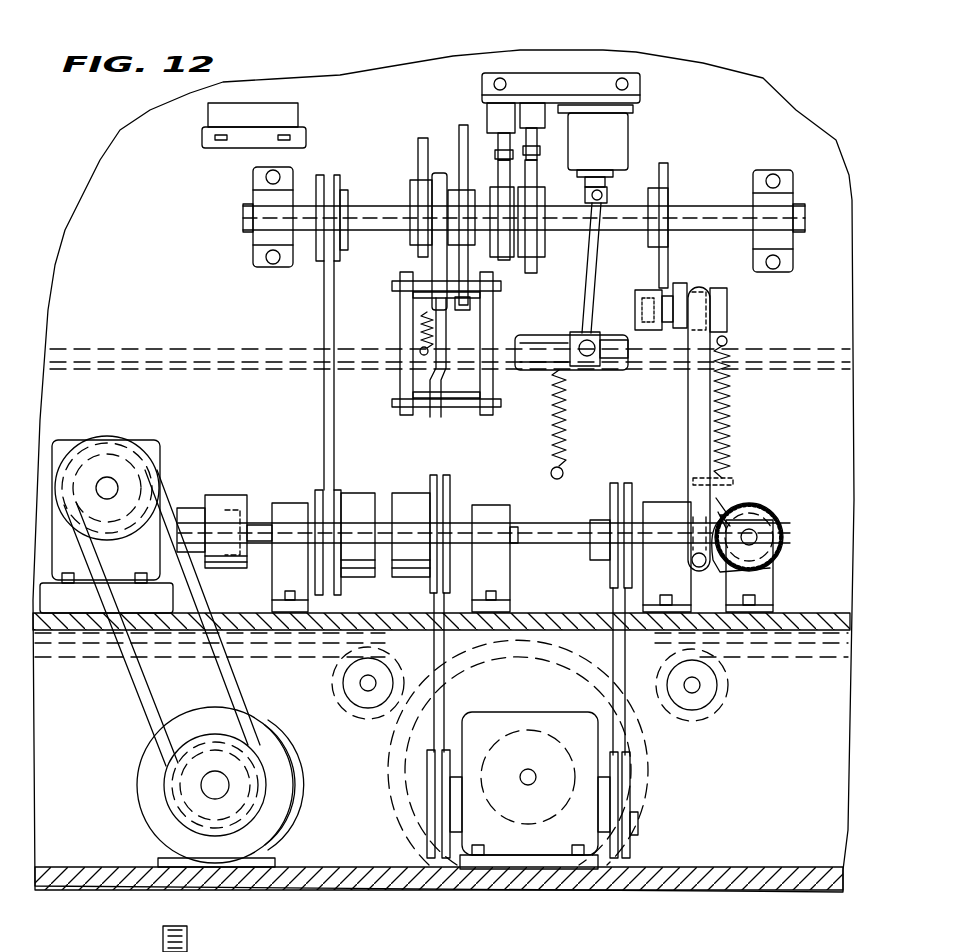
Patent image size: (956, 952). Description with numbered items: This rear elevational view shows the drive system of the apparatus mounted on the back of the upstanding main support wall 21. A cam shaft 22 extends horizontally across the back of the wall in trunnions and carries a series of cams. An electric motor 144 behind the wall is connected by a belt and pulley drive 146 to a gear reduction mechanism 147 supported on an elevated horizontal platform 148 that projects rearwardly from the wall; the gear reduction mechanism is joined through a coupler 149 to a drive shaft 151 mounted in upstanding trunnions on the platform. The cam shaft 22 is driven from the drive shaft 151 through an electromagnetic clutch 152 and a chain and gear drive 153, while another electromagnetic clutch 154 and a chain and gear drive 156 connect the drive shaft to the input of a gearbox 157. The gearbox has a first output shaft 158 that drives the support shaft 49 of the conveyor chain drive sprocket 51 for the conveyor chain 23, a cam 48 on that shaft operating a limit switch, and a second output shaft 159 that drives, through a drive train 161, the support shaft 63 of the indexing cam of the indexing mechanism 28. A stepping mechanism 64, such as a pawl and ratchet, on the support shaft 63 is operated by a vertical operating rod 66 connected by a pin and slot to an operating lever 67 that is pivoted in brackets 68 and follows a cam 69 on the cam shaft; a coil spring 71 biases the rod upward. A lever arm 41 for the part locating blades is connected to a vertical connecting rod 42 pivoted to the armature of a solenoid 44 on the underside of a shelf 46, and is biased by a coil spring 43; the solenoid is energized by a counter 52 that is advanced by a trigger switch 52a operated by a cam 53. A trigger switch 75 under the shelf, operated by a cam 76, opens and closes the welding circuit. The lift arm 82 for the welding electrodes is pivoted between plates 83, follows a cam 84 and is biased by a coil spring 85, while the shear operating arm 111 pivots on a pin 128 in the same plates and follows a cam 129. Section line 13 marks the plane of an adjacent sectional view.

The main support wall 21 is at (108, 197).
The cam shaft 22 is at (388, 206).
The conveyor chain 23 is at (207, 355).
The section line 13 is at (520, 638).
The indexing mechanism 28 is at (740, 492).
The lever arm 41 is at (598, 336).
The connecting rod 42 is at (594, 283).
The coil spring 43 is at (560, 440).
The solenoid 44 is at (618, 146).
The shelf 46 is at (640, 97).
The cam 48 is at (551, 812).
The support shaft 49 is at (522, 770).
The conveyor chain drive sprocket 51 is at (656, 740).
The counter 52 is at (274, 108).
The trigger switch 52a is at (500, 112).
The cam 53 is at (505, 180).
The support shaft 63 is at (752, 536).
The stepping mechanism 64 is at (735, 565).
The operating rod 66 is at (693, 428).
The operating lever 67 is at (684, 280).
The brackets 68 is at (728, 306).
The cam 69 is at (668, 190).
The coil spring 71 is at (727, 432).
The trigger switch 75 is at (535, 108).
The cam 76 is at (540, 178).
The lift arm 82 is at (436, 372).
The plates 83 is at (480, 410).
The cam 84 is at (466, 255).
The coil spring 85 is at (422, 332).
The shear operating arm 111 is at (440, 178).
The pin 128 is at (400, 286).
The cam 129 is at (420, 160).
The electric motor 144 is at (290, 808).
The belt and pulley drive 146 is at (225, 688).
The gear reduction mechanism 147 is at (160, 478).
The platform 148 is at (246, 615).
The coupler 149 is at (223, 498).
The drive shaft 151 is at (265, 523).
The electromagnetic clutch 152 is at (362, 500).
The chain and gear drive 153 is at (316, 332).
The electromagnetic clutch 154 is at (420, 524).
The chain and gear drive 156 is at (440, 604).
The gearbox 157 is at (490, 724).
The first output shaft 158 is at (518, 752).
The second output shaft 159 is at (640, 815).
The drive train 161 is at (628, 500).